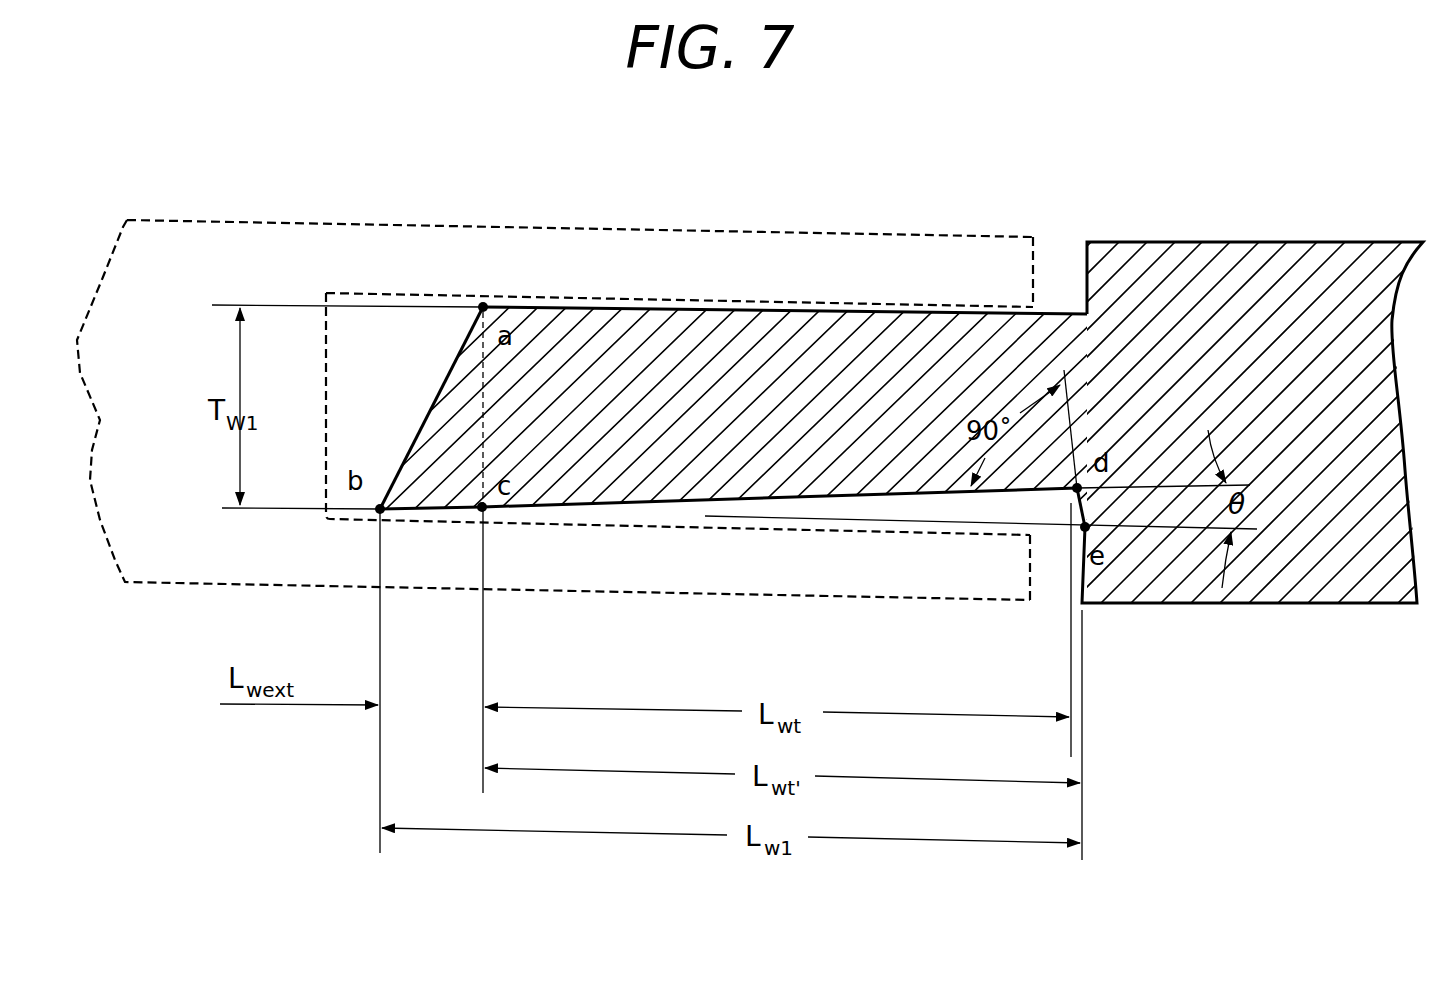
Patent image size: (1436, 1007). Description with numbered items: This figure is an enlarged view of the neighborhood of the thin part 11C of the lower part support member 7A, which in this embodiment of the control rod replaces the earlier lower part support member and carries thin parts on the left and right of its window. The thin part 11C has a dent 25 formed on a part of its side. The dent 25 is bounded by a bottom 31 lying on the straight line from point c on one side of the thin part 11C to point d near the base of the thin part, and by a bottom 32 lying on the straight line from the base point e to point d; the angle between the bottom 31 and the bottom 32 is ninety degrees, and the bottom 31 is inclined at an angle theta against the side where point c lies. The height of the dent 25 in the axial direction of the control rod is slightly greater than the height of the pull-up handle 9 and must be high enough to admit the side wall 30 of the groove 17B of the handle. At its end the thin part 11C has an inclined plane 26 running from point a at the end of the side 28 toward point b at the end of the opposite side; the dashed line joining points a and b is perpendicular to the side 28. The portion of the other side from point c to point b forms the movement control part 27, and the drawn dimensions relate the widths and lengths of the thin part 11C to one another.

The lower part support member 7A is at (1313, 286).
The pull-up handle 9 is at (280, 222).
The thin part 11C is at (888, 313).
The groove 17B is at (332, 333).
The dent 25 is at (927, 498).
The inclined plane 26 is at (426, 418).
The movement control part 27 is at (440, 508).
The side 28 is at (628, 312).
The side wall 30 is at (560, 565).
The bottom 31 is at (763, 498).
The bottom 32 is at (1080, 498).